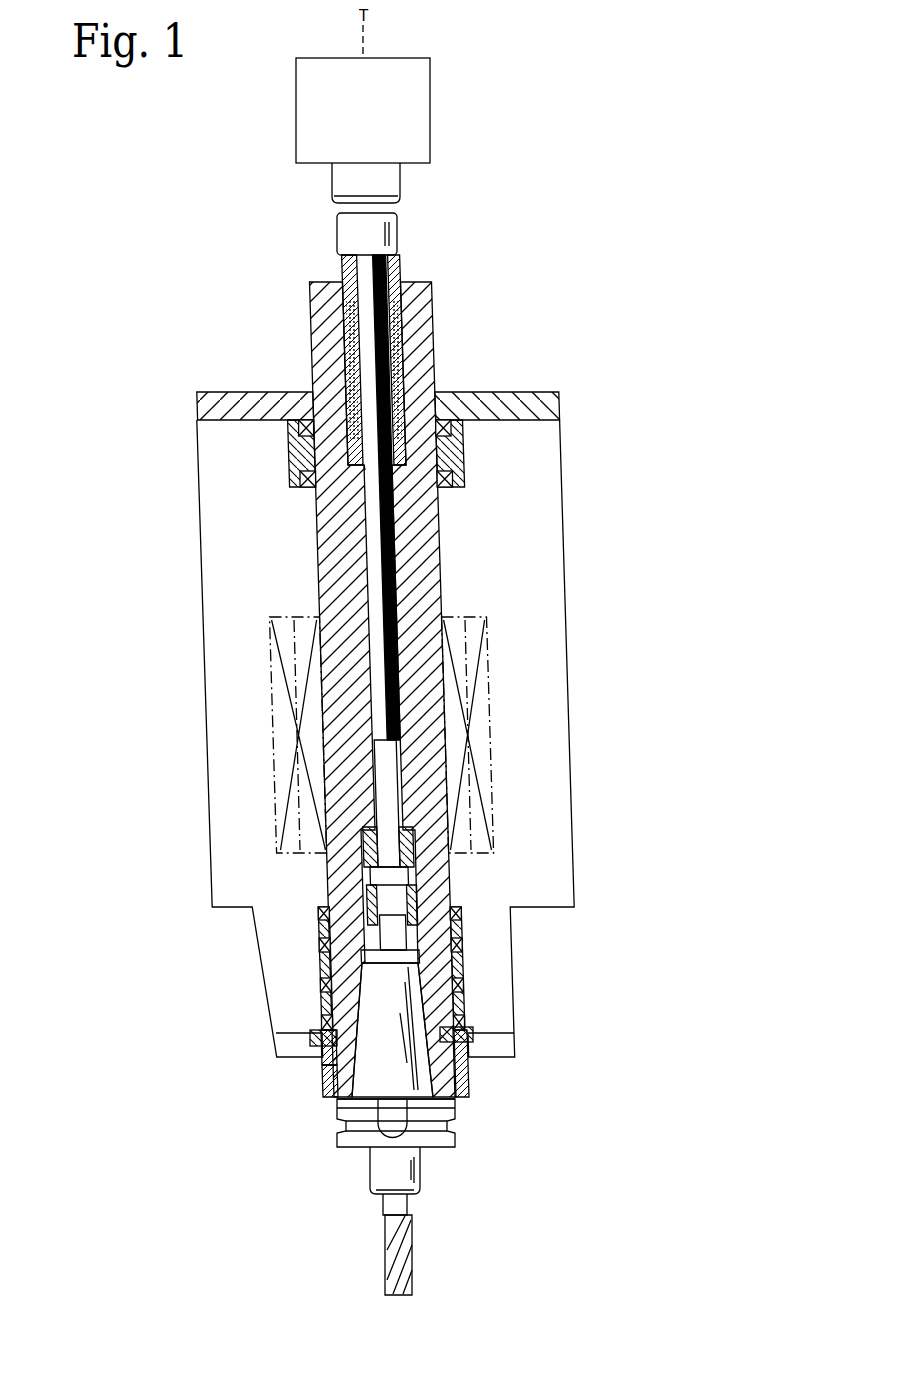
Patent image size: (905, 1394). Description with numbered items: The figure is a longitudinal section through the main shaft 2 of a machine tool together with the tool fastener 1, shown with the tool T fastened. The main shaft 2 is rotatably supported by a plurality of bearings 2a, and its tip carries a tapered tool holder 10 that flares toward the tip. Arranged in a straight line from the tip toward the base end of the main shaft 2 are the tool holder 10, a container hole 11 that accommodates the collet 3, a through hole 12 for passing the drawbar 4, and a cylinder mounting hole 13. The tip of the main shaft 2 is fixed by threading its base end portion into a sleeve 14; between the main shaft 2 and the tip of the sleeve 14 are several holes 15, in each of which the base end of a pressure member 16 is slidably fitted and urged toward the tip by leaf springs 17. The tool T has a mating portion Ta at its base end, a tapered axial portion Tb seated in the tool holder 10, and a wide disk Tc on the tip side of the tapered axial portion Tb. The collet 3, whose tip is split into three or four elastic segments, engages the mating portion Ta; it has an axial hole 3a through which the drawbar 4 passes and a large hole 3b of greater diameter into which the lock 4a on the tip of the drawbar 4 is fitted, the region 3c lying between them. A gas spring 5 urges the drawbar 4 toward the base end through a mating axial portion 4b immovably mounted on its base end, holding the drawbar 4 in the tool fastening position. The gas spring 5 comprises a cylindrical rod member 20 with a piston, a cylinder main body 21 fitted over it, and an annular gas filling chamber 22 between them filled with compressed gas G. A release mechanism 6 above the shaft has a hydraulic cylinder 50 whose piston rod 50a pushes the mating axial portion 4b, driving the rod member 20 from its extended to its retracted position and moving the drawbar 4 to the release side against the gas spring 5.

The tool fastener 1 is at (567, 310).
The main shaft 2 is at (441, 584).
The bearings 2a is at (308, 482).
The collet 3 is at (461, 831).
The axial hole 3a is at (425, 835).
The large hole 3b is at (410, 900).
The collet intermediate portion 3c is at (425, 872).
The drawbar 4 is at (375, 727).
The lock 4a is at (373, 877).
The mating axial portion 4b is at (398, 236).
The gas spring 5 is at (318, 320).
The release mechanism 6 is at (472, 128).
The tool holder 10 is at (312, 1024).
The container hole 11 is at (327, 840).
The through hole 12 is at (372, 648).
The cylinder mounting hole 13 is at (400, 342).
The sleeve 14 is at (472, 1082).
The holes 15 is at (330, 1085).
The pressure member 16 is at (463, 1093).
The leaf springs 17 is at (313, 1060).
The rod member 20 is at (343, 262).
The cylinder main body 21 is at (398, 290).
The annular gas filling chamber 22 is at (342, 405).
The hydraulic cylinder 50 is at (431, 64).
The piston rod 50a is at (400, 180).
The compressed gas G is at (402, 388).
The tool T is at (392, 1103).
The mating portion Ta is at (358, 955).
The tapered axial portion Tb is at (445, 1010).
The wide disk Tc is at (337, 1142).